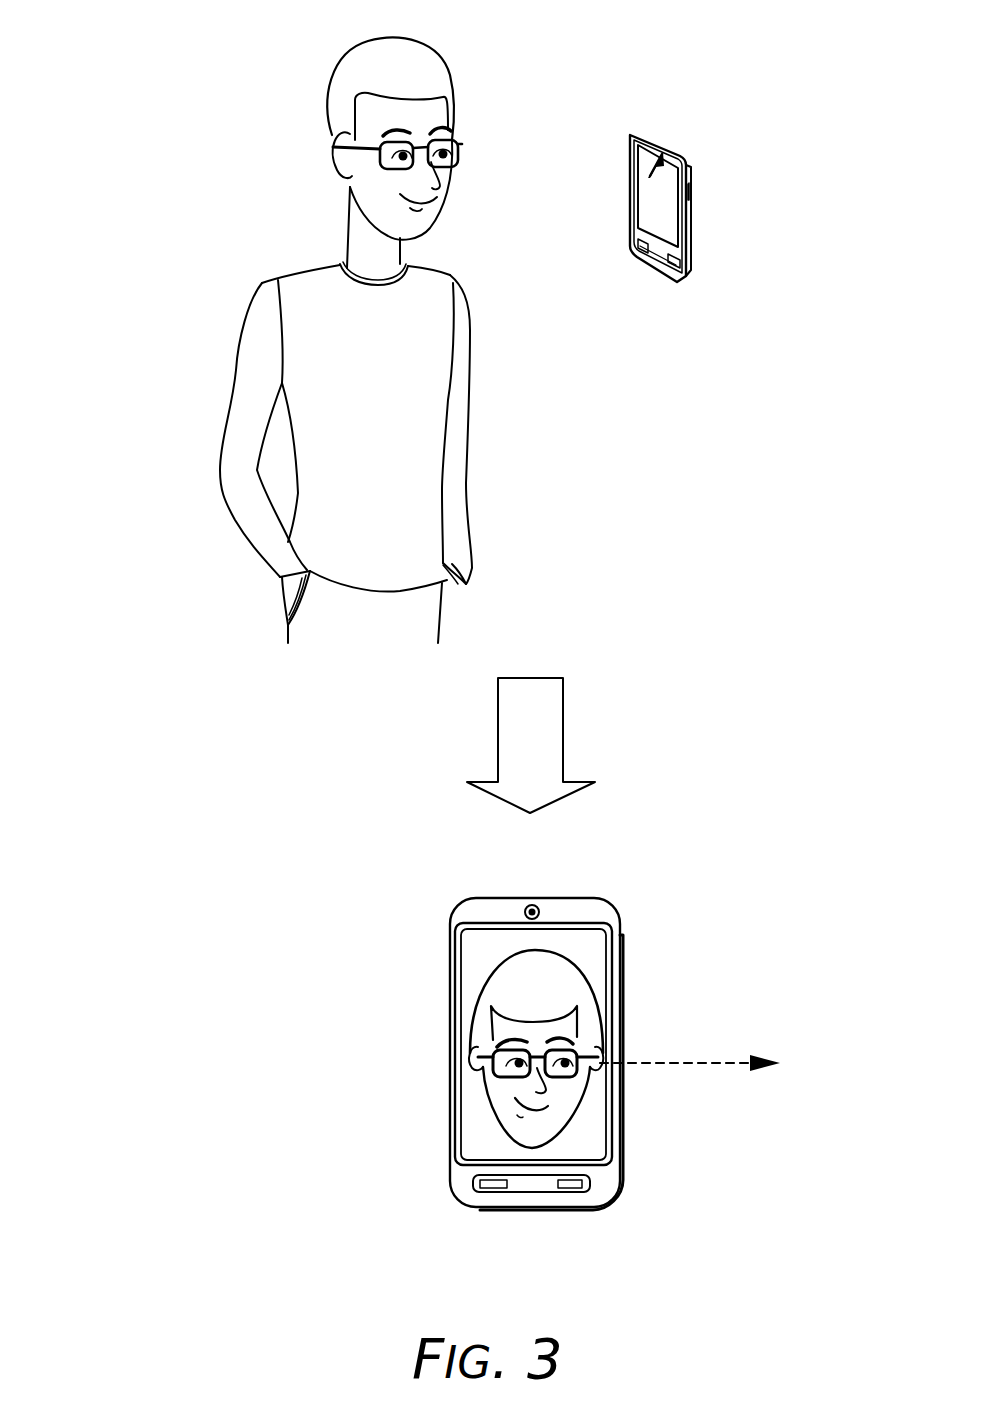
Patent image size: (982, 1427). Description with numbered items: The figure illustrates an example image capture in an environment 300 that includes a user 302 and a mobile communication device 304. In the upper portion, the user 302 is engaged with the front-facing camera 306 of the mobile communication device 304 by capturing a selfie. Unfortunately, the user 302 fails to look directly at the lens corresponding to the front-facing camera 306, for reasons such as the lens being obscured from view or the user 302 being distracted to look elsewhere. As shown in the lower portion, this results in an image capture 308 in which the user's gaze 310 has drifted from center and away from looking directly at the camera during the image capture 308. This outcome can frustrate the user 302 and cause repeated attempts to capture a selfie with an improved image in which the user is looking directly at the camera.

The environment 300 is at (167, 33).
The user 302 is at (360, 45).
The mobile communication device 304 is at (692, 163).
The front-facing camera 306 is at (650, 174).
The image capture 308 is at (592, 960).
The gaze 310 is at (743, 1048).